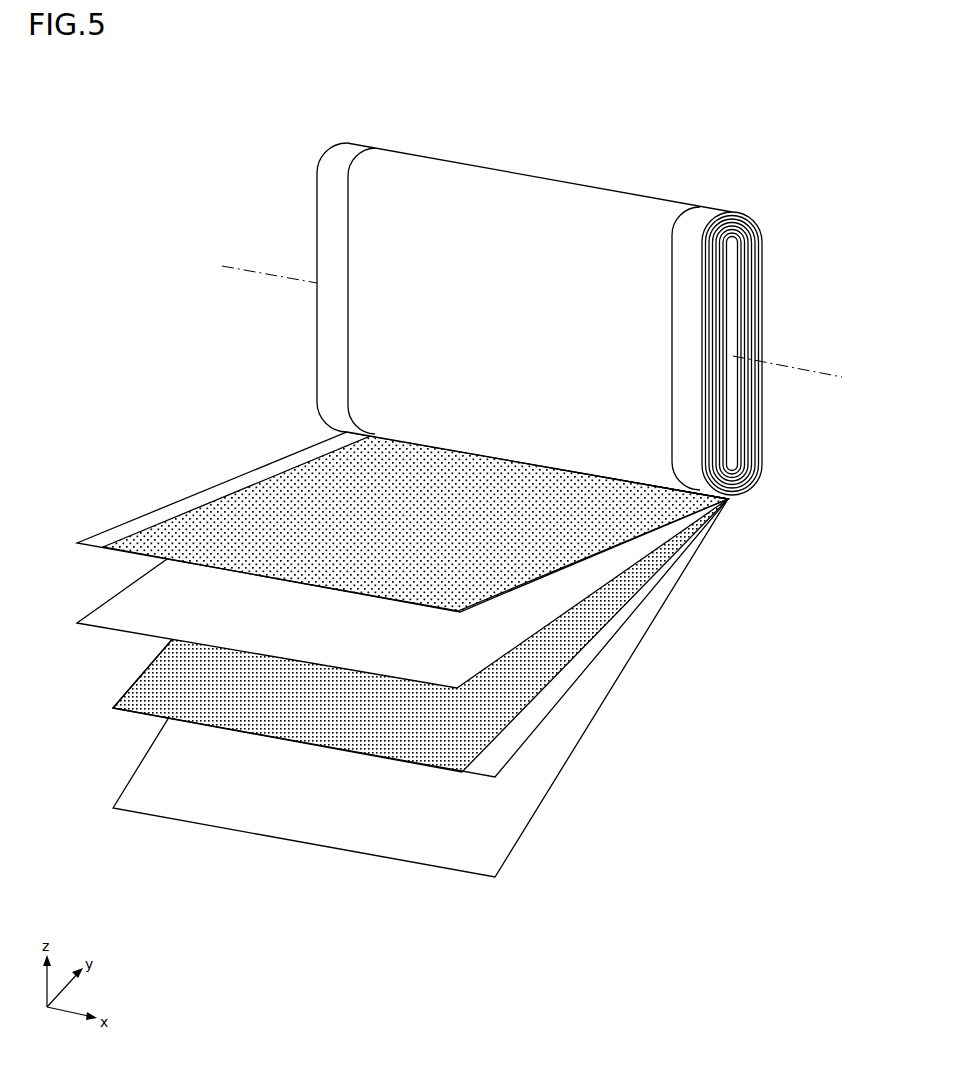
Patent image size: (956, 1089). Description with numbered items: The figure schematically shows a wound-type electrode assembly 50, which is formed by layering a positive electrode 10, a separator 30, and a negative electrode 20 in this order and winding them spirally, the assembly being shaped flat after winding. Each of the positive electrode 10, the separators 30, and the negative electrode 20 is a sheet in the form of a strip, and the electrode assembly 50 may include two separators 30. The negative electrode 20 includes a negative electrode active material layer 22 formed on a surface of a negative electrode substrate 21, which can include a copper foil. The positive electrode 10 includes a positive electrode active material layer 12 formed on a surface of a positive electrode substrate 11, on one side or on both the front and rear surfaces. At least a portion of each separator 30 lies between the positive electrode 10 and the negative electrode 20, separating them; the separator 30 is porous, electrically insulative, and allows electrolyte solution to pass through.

The electrode assembly 50 is at (207, 117).
The negative electrode 20 is at (93, 441).
The negative electrode substrate 21 is at (193, 500).
The negative electrode active material layer 22 is at (255, 510).
The separator 30 is at (150, 632).
The positive electrode 10 is at (697, 656).
The positive electrode substrate 11 is at (492, 753).
The positive electrode active material layer 12 is at (473, 725).